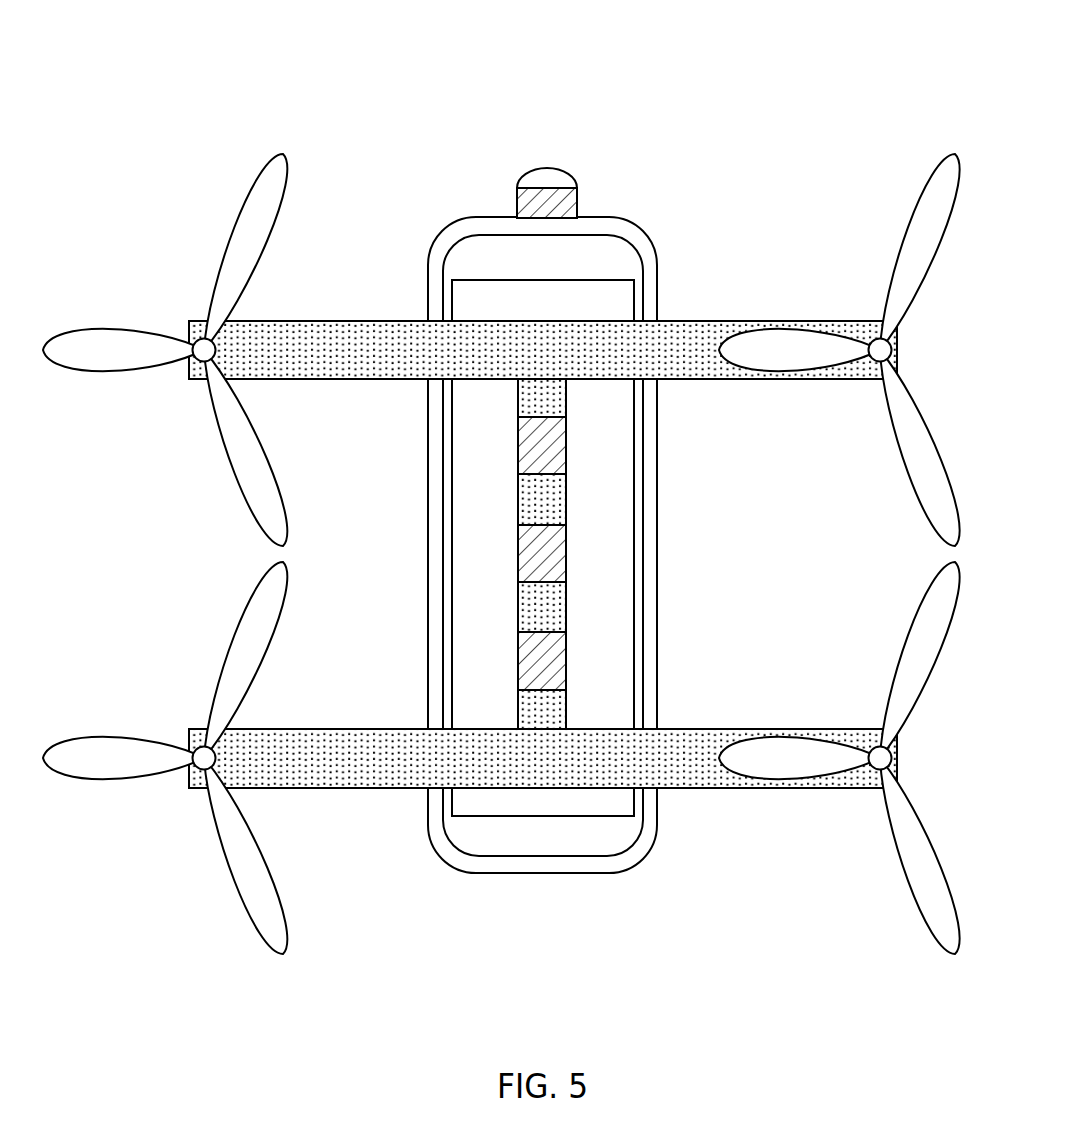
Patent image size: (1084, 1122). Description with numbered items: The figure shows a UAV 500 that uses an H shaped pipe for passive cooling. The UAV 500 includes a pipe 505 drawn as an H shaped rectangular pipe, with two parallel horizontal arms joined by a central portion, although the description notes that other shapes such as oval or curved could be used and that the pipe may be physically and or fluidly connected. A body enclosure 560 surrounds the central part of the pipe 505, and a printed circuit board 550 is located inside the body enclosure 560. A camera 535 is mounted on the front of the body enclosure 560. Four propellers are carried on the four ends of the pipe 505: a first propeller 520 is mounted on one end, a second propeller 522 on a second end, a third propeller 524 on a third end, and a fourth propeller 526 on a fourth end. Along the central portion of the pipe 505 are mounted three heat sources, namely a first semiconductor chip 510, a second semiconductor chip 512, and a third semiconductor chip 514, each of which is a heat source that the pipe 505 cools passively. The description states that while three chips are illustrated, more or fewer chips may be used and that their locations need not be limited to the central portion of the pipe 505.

The UAV 500 is at (775, 68).
The pipe 505 is at (680, 321).
The first semiconductor chip 510 is at (567, 447).
The second semiconductor chip 512 is at (567, 553).
The third semiconductor chip 514 is at (567, 662).
The first propeller 520 is at (263, 178).
The second propeller 522 is at (915, 218).
The third propeller 524 is at (912, 637).
The fourth propeller 526 is at (236, 647).
The camera 535 is at (550, 178).
The printed circuit board 550 is at (518, 280).
The body enclosure 560 is at (650, 522).